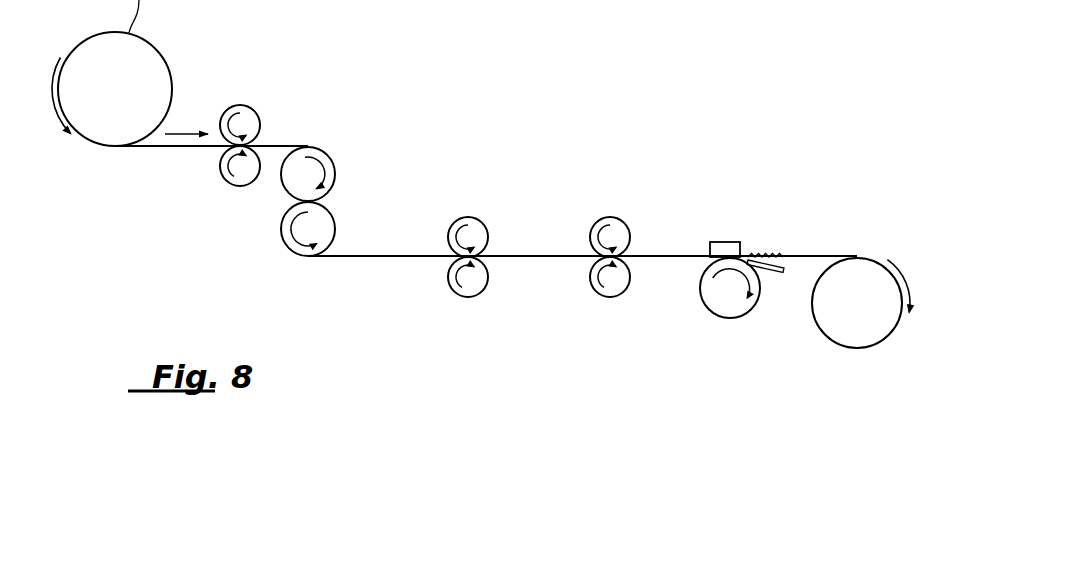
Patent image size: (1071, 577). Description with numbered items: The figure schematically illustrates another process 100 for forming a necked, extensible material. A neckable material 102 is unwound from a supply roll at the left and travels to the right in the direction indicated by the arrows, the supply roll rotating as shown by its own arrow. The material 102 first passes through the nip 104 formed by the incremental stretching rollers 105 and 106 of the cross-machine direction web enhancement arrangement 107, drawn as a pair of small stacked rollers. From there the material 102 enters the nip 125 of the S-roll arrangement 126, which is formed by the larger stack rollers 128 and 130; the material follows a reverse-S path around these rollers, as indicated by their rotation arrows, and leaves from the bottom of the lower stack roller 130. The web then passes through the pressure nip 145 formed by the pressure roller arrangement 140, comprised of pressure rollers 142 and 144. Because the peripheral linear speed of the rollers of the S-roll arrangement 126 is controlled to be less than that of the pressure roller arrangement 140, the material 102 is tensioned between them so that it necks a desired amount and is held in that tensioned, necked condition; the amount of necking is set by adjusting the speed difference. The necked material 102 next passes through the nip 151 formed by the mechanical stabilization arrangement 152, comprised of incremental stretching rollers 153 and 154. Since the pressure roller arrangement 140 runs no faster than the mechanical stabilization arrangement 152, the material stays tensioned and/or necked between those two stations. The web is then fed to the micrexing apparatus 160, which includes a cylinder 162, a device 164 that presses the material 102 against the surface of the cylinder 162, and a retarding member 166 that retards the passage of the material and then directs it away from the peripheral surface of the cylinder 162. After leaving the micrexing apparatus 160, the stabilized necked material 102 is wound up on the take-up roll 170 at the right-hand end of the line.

The process 100 is at (328, 116).
The neckable material 102 is at (158, 147).
The nip 104 is at (212, 153).
The incremental stretching roller 105 is at (254, 110).
The incremental stretching roller 106 is at (236, 187).
The cross-machine direction web enhancement arrangement 107 is at (221, 98).
The nip 125 is at (335, 201).
The S-roll arrangement 126 is at (277, 209).
The stack roller 128 is at (330, 156).
The stack roller 130 is at (334, 238).
The pressure roller arrangement 140 is at (500, 241).
The pressure roller 142 is at (462, 297).
The pressure roller 144 is at (480, 220).
The pressure nip 145 is at (443, 265).
The nip 151 is at (585, 266).
The mechanical stabilization arrangement 152 is at (642, 243).
The incremental stretching roller 153 is at (622, 220).
The incremental stretching roller 154 is at (610, 297).
The micrexing apparatus 160 is at (758, 238).
The cylinder 162 is at (732, 318).
The device for pressing the material 164 is at (728, 242).
The retarding member 166 is at (772, 273).
The take-up roll 170 is at (862, 349).